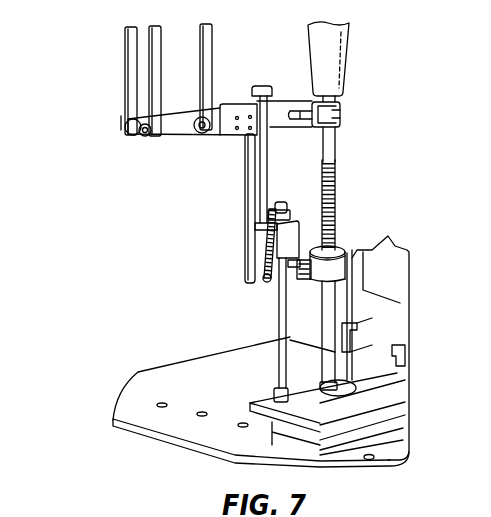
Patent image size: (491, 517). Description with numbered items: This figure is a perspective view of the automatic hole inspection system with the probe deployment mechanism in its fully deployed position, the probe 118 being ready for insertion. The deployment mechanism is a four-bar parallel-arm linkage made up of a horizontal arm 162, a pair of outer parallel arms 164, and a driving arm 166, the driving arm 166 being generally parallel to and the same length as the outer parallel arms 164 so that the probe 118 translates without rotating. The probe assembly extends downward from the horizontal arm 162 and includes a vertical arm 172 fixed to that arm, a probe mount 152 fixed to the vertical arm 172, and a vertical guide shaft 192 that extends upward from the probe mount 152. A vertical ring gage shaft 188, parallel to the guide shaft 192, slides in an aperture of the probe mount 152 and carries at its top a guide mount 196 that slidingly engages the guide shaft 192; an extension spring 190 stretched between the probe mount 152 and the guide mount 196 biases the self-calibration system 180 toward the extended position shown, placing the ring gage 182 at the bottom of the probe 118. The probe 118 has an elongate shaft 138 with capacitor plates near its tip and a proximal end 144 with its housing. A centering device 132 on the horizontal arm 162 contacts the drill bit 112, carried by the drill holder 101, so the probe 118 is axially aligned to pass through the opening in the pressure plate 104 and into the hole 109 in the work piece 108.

The drill holder 101 is at (330, 55).
The pressure plate 104 is at (380, 422).
The work piece 108 is at (140, 386).
The hole 109 is at (243, 427).
The drill bit 112 is at (336, 145).
The probe 118 is at (318, 308).
The centering device 132 is at (345, 114).
The elongate shaft 138 is at (366, 285).
The proximal end 144 is at (343, 250).
The probe mount 152 is at (338, 215).
The horizontal arm 162 is at (175, 140).
The outer parallel arms 164 is at (155, 72).
The driving arm 166 is at (207, 55).
The vertical arm 172 is at (252, 201).
The self-calibration system 180 is at (302, 404).
The ring gage 182 is at (368, 360).
The ring gage shaft 188 is at (276, 351).
The extension spring 190 is at (262, 253).
The vertical guide shaft 192 is at (257, 153).
The guide mount 196 is at (283, 200).